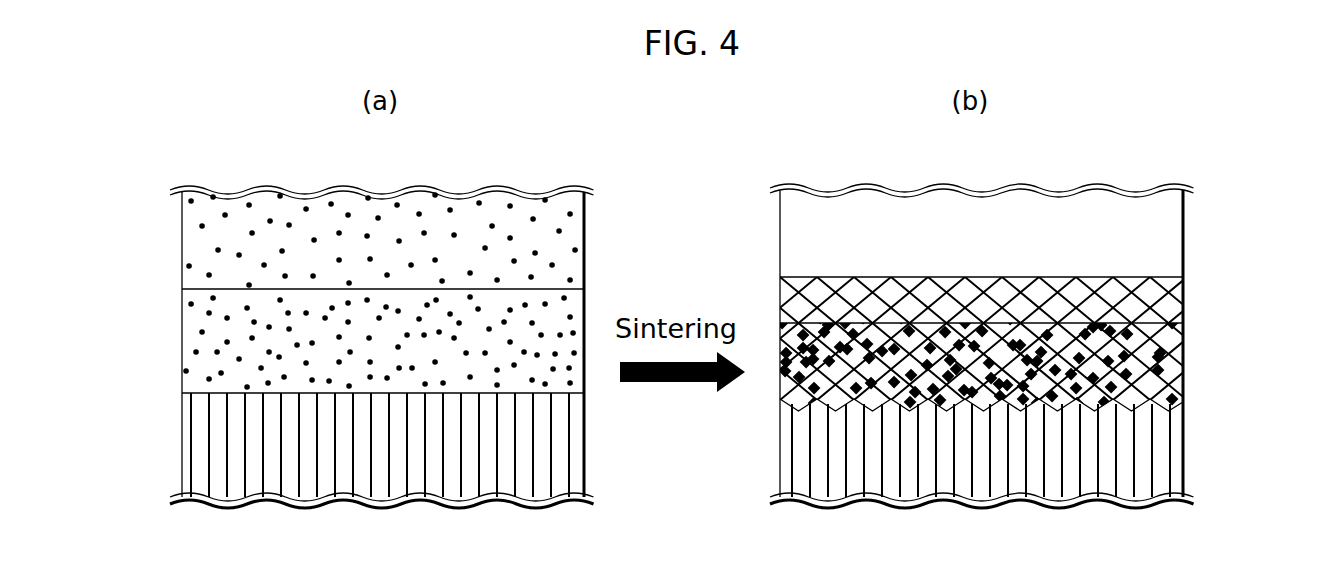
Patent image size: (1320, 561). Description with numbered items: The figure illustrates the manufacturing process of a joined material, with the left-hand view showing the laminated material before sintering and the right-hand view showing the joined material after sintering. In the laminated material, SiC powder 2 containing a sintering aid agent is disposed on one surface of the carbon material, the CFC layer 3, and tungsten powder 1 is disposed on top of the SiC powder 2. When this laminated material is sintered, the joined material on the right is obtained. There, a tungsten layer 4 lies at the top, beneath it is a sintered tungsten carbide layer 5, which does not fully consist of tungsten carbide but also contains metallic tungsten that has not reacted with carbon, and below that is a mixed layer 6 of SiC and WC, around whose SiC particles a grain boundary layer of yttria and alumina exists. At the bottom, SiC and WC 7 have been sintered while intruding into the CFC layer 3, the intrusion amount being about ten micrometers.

The tungsten powder 1 is at (202, 267).
The SiC powder 2 is at (202, 358).
The CFC layer 3 is at (190, 460).
The tungsten layer 4 is at (1170, 245).
The sintered tungsten carbide layer 5 is at (1186, 318).
The mixed layer of SiC and WC 6 is at (1186, 372).
The SiC and WC intruding into the CFC layer 7 is at (1186, 418).